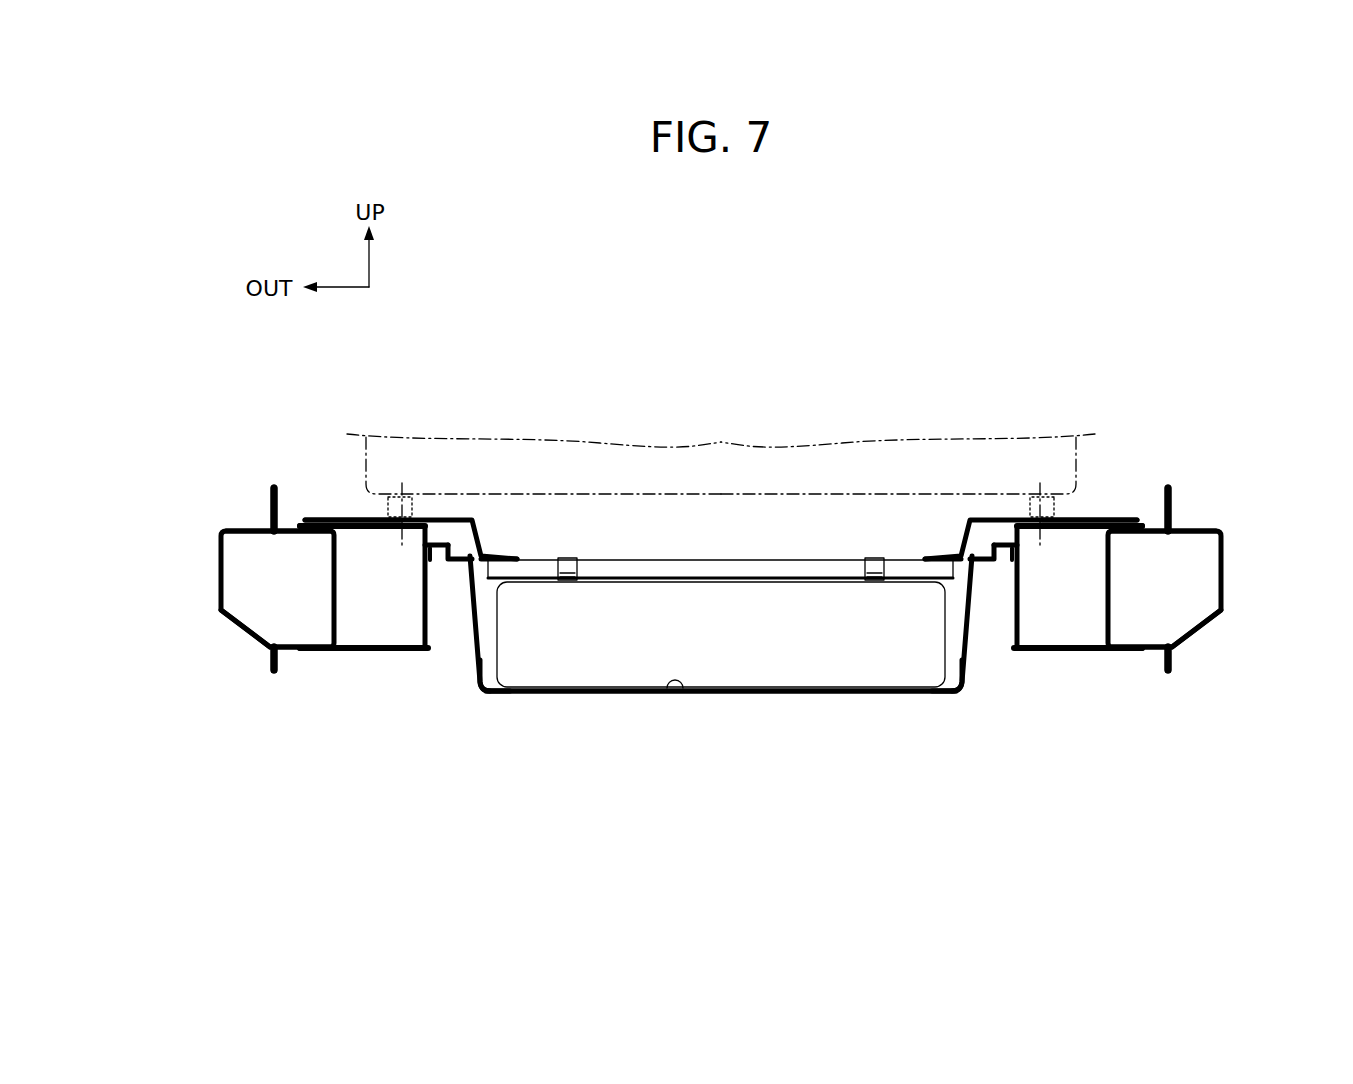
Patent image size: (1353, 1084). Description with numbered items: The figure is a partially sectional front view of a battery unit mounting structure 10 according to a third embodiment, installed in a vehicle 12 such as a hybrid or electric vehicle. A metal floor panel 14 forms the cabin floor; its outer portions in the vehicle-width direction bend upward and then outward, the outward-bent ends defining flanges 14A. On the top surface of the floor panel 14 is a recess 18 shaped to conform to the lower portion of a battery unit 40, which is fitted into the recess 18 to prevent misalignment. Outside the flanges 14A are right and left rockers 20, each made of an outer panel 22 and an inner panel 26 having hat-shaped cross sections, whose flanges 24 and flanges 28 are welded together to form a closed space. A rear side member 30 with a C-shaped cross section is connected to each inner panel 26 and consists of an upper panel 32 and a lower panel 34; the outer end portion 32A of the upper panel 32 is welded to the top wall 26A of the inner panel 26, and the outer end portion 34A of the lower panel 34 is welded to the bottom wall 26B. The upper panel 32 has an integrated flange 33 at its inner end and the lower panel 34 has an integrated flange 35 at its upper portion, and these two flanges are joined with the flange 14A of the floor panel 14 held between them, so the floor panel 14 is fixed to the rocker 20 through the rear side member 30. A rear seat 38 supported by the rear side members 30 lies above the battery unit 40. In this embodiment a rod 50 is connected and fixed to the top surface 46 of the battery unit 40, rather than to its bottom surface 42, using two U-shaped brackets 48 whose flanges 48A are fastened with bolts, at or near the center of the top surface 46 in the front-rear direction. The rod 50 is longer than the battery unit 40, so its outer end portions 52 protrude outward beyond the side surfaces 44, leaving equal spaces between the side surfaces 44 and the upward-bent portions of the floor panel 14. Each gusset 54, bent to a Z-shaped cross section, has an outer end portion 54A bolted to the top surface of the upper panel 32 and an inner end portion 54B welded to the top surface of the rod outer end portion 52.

The battery unit mounting structure 10 is at (610, 754).
The vehicle 12 is at (591, 400).
The floor panel 14 is at (721, 680).
The flange 14A is at (467, 648).
The recess 18 is at (671, 693).
The rocker 20 is at (723, 552).
The outer panel 22 is at (218, 586).
The flange 24 is at (268, 503).
The inner panel 26 is at (721, 581).
The top wall 26A is at (300, 534).
The bottom wall 26B is at (300, 640).
The flange 28 is at (292, 488).
The rear side member 30 is at (332, 662).
The upper panel 32 is at (333, 523).
The outer end portion 32A is at (301, 520).
The flange 33 is at (446, 541).
The lower panel 34 is at (357, 653).
The outer end portion 34A is at (303, 657).
The flange 35 is at (437, 562).
The rear seat 38 is at (690, 445).
The battery unit 40 is at (756, 568).
The bottom surface 42 is at (757, 694).
The side surface 44 is at (493, 693).
The top surface 46 is at (818, 576).
The bracket 48 is at (722, 583).
The flange 48A is at (566, 583).
The rod 50 is at (720, 478).
The outer end portion 52 is at (456, 564).
The gusset 54 is at (721, 442).
The outer end portion 54A is at (365, 517).
The inner end portion 54B is at (518, 556).